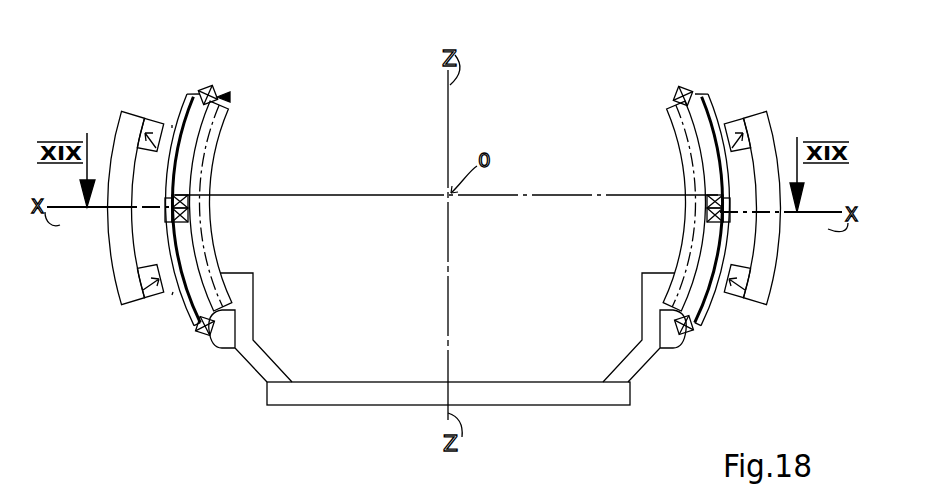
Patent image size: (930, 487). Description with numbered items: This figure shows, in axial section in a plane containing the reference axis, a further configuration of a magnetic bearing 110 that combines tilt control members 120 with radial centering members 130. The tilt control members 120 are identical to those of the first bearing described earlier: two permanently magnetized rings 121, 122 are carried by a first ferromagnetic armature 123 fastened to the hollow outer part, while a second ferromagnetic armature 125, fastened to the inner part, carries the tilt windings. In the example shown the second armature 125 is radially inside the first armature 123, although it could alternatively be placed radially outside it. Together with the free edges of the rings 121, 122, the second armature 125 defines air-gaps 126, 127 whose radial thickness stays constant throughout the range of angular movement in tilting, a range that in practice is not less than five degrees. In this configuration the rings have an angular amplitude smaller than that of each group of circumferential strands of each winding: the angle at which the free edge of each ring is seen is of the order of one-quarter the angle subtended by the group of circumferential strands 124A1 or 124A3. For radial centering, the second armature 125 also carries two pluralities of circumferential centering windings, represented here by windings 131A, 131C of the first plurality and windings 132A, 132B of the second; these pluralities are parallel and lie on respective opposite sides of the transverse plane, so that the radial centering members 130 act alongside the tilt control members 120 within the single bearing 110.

The magnetic bearing 110 is at (550, 103).
The tilt control members 120 is at (91, 216).
The permanently magnetized ring 121 is at (150, 115).
The permanently magnetized ring 122 is at (155, 298).
The first ferromagnetic armature 123 is at (133, 305).
The group of circumferential strands 124A1 is at (187, 97).
The group of circumferential strands 124A3 is at (193, 332).
The second ferromagnetic armature 125 is at (213, 153).
The air-gap 126 is at (172, 125).
The air-gap 127 is at (172, 295).
The radial centering members 130 is at (228, 97).
The circumferential centering winding 131A is at (206, 87).
The circumferential centering winding 131C is at (683, 88).
The circumferential centering winding 132A is at (255, 340).
The circumferential centering winding 132B is at (683, 334).